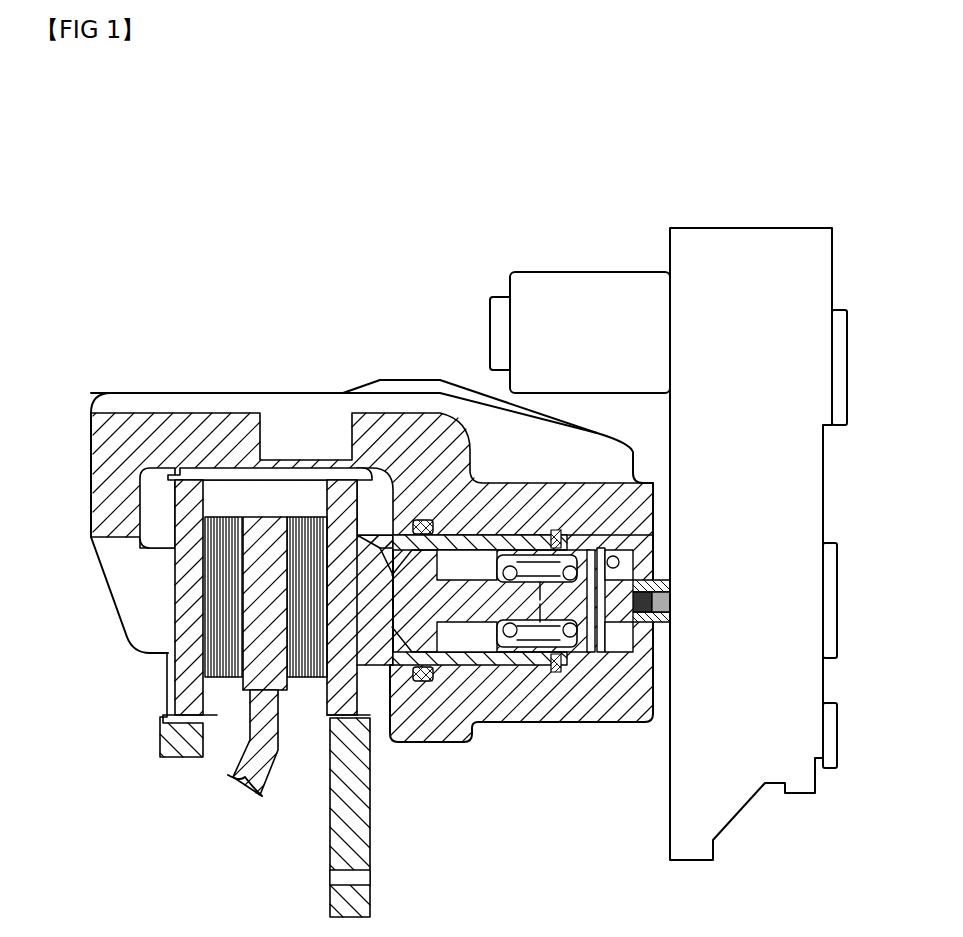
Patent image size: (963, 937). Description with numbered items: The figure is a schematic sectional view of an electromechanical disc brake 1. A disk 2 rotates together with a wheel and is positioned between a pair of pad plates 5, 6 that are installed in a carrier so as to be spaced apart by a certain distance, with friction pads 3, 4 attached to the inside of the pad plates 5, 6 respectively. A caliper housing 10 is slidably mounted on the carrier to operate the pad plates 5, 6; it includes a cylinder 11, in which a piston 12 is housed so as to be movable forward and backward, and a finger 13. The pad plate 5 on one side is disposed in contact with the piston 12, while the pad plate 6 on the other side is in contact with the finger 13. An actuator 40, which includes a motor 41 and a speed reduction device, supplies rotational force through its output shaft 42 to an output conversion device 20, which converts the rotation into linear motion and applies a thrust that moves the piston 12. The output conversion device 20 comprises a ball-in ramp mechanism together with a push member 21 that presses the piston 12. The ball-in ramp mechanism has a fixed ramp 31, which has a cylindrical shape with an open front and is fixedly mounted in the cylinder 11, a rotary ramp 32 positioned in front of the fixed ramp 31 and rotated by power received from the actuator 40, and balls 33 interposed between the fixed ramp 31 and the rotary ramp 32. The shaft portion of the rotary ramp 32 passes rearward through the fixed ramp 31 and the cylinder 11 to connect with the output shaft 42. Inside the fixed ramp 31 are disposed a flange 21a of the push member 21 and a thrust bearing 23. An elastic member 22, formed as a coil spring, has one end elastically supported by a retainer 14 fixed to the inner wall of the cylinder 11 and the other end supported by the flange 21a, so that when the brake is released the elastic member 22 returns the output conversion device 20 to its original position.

The electromechanical disc brake 1 is at (383, 139).
The disk 2 is at (280, 695).
The friction pad 3 is at (305, 678).
The friction pad 4 is at (232, 675).
The pad plate 5 is at (352, 685).
The pad plate 6 is at (180, 688).
The caliper housing 10 is at (355, 385).
The cylinder 11 is at (448, 668).
The piston 12 is at (428, 682).
The finger 13 is at (100, 482).
The retainer 14 is at (512, 568).
The output conversion device 20 is at (610, 672).
The push member 21 is at (472, 630).
The flange 21a is at (560, 645).
The elastic member 22 is at (506, 636).
The thrust bearing 23 is at (591, 656).
The fixed ramp 31 is at (625, 680).
The rotary ramp 32 is at (600, 548).
The balls 33 is at (620, 560).
The actuator 40 is at (765, 226).
The motor 41 is at (574, 271).
The output shaft 42 is at (671, 600).